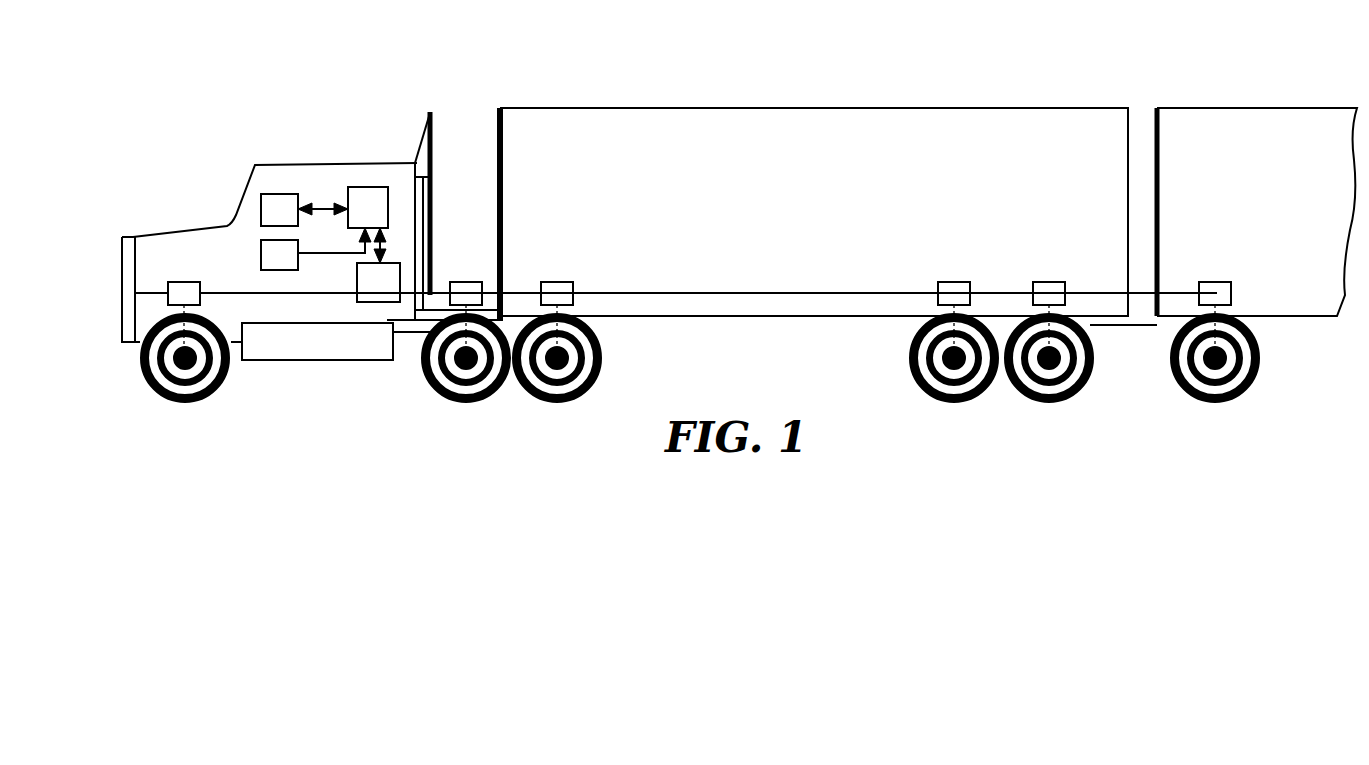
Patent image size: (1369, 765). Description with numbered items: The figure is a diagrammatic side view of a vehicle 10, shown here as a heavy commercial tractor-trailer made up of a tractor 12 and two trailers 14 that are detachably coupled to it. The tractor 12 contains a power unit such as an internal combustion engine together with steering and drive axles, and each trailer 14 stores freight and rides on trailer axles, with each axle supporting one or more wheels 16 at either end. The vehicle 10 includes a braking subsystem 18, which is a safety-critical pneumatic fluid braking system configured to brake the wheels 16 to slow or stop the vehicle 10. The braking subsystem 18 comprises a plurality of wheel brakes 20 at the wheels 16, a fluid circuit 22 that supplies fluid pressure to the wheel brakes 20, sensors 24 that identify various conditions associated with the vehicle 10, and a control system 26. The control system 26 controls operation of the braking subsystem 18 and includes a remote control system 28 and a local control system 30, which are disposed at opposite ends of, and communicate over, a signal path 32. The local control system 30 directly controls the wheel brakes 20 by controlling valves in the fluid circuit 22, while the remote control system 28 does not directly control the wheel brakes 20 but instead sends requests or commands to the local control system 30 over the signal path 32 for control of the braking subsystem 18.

The vehicle 10 is at (258, 126).
The tractor 12 is at (160, 230).
The trailer 14 is at (605, 115).
The wheel 16 is at (163, 377).
The braking subsystem 18 is at (456, 200).
The wheel brake 20 is at (168, 297).
The fluid circuit 22 is at (383, 303).
The sensor 24 is at (262, 252).
The control system 26 is at (417, 112).
The remote control system 28 is at (282, 196).
The local control system 30 is at (372, 196).
The signal path 32 is at (321, 205).